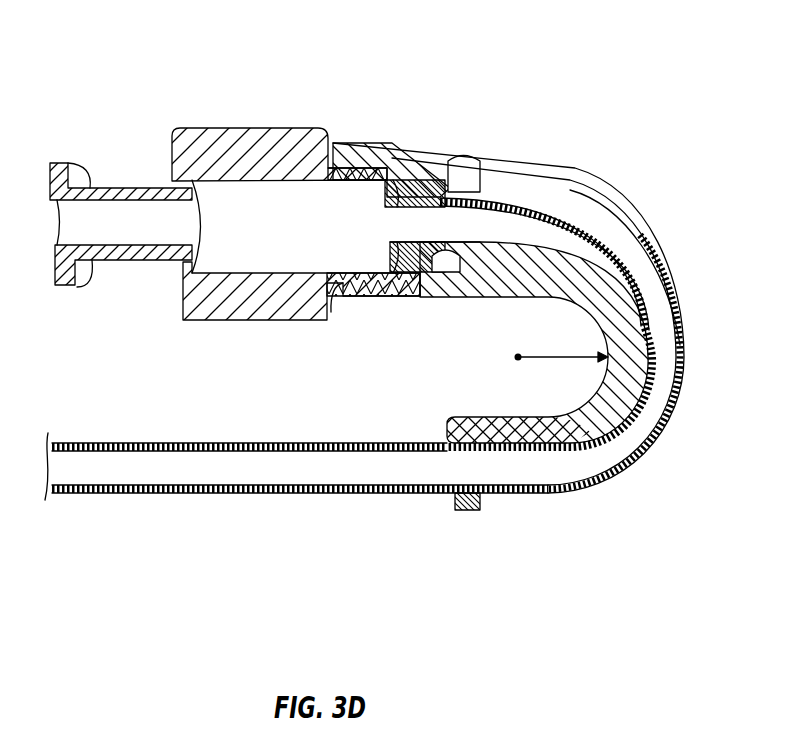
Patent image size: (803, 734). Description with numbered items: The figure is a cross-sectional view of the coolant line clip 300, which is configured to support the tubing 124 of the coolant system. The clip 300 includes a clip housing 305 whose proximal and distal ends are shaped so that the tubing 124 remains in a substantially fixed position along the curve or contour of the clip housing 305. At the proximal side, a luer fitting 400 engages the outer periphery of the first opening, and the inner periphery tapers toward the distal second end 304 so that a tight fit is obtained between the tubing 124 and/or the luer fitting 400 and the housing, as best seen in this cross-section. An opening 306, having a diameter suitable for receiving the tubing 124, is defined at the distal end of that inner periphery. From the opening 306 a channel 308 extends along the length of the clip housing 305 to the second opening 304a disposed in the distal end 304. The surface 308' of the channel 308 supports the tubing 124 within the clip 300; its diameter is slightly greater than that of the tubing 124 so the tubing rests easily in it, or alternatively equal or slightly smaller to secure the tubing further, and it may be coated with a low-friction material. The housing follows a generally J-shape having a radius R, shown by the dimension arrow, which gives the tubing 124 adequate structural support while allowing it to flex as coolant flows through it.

The clip 300 is at (141, 45).
The luer fitting 400 is at (224, 122).
The clip housing 305 is at (496, 116).
The channel 308 is at (546, 287).
The channel surface 308' is at (626, 251).
The opening 306 is at (435, 266).
The second opening 304a is at (447, 436).
The second end 304 is at (482, 500).
The tubing 124 is at (262, 494).